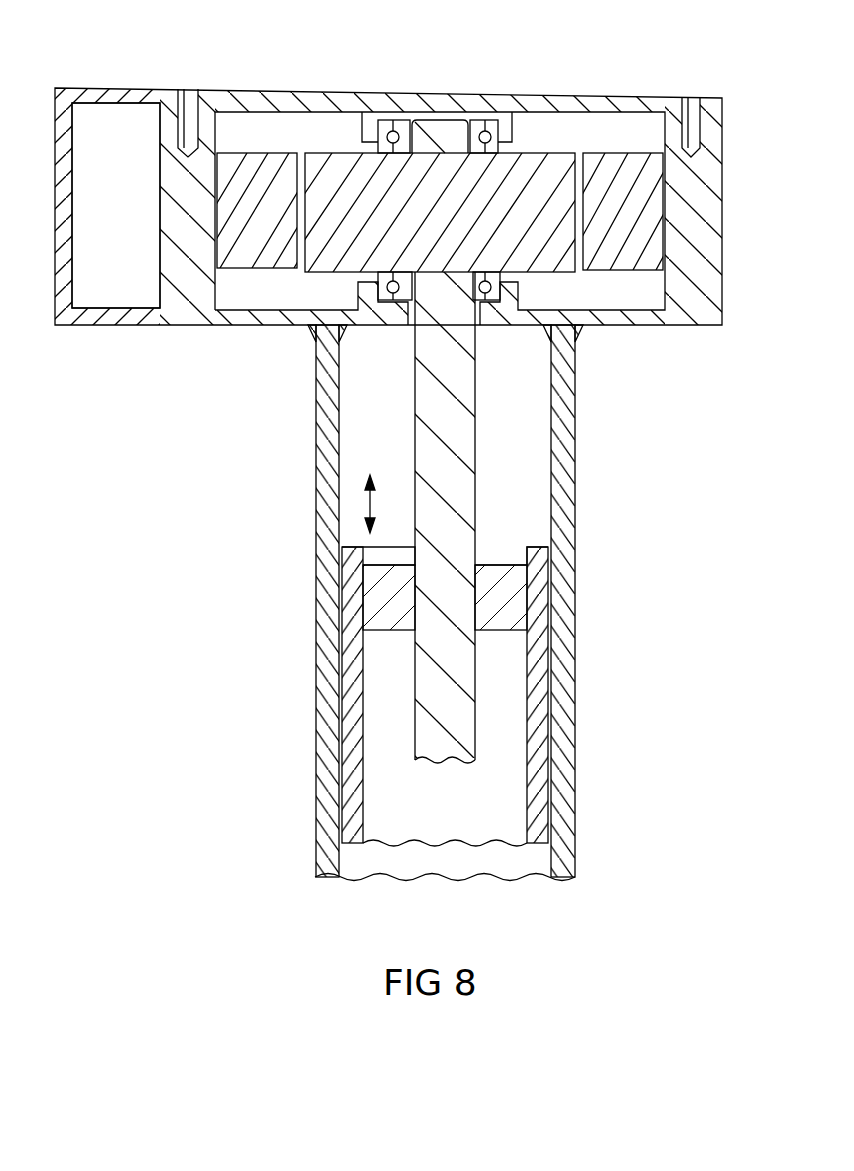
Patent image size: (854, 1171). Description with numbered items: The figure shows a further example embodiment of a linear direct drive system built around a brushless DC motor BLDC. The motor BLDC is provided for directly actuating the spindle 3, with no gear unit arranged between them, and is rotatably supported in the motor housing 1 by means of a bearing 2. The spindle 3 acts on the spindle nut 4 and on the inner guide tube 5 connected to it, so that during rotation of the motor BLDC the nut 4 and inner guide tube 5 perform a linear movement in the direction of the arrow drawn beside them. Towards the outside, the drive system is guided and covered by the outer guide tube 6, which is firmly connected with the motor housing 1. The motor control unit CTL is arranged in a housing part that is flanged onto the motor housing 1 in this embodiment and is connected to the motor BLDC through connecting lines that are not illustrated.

The motor housing 1 is at (703, 188).
The bearing 2 is at (388, 125).
The spindle 3 is at (465, 385).
The spindle nut 4 is at (495, 570).
The inner guide tube 5 is at (537, 663).
The outer guide tube 6 is at (567, 752).
The brushless DC motor BLDC is at (535, 170).
The motor control unit CTL is at (105, 120).